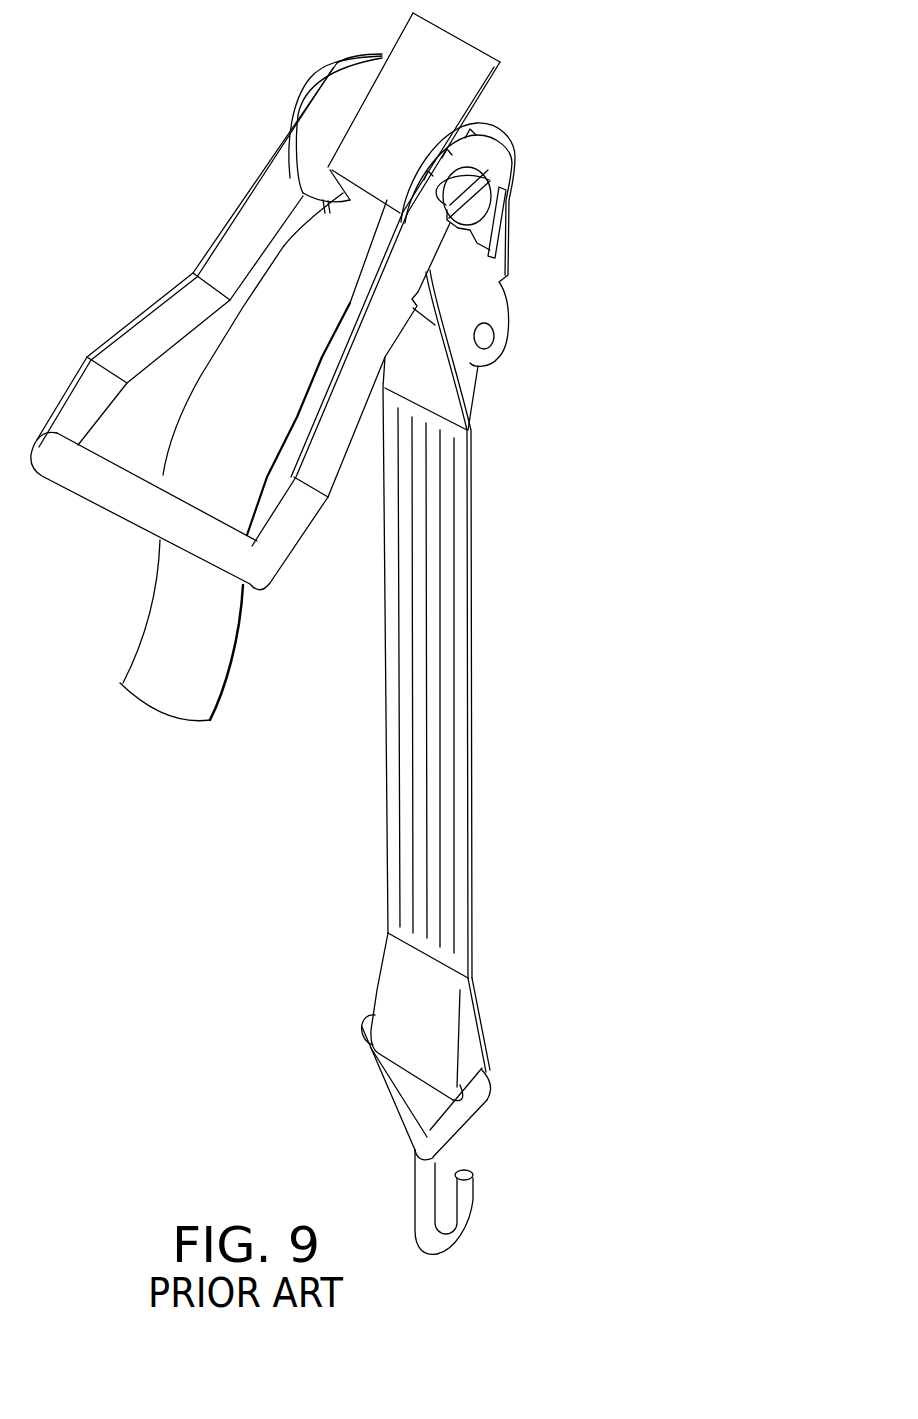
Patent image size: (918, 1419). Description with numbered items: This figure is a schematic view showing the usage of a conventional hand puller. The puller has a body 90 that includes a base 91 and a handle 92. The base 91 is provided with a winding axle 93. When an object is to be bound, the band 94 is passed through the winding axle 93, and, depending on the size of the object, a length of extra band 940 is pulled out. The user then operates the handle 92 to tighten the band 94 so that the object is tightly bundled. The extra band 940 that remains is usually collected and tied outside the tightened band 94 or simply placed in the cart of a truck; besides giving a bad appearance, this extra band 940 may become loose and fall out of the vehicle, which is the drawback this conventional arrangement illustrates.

The body 90 is at (492, 207).
The base 91 is at (497, 250).
The handle 92 is at (250, 217).
The winding axle 93 is at (477, 208).
The band 94 is at (413, 50).
The extra band 940 is at (207, 653).